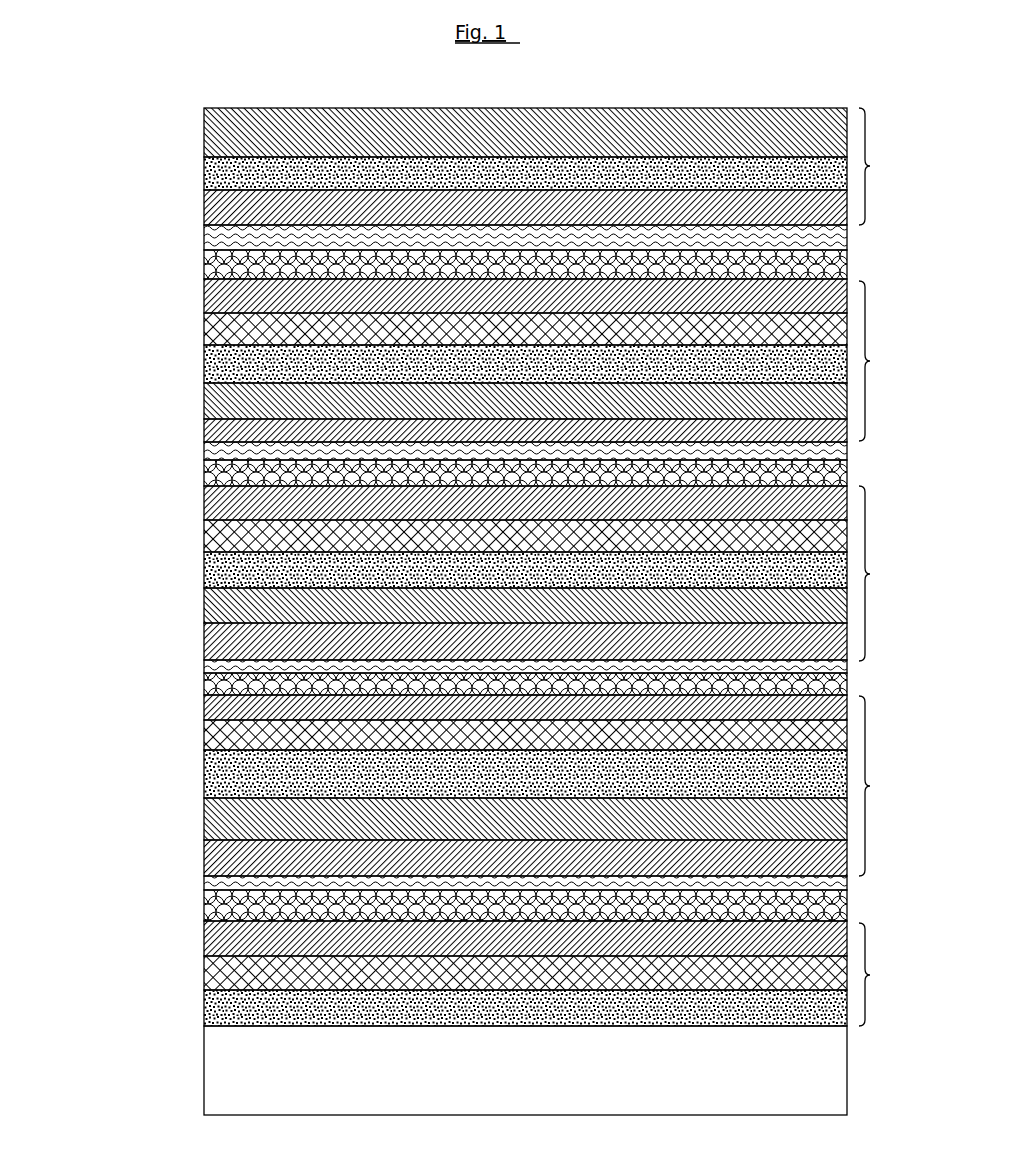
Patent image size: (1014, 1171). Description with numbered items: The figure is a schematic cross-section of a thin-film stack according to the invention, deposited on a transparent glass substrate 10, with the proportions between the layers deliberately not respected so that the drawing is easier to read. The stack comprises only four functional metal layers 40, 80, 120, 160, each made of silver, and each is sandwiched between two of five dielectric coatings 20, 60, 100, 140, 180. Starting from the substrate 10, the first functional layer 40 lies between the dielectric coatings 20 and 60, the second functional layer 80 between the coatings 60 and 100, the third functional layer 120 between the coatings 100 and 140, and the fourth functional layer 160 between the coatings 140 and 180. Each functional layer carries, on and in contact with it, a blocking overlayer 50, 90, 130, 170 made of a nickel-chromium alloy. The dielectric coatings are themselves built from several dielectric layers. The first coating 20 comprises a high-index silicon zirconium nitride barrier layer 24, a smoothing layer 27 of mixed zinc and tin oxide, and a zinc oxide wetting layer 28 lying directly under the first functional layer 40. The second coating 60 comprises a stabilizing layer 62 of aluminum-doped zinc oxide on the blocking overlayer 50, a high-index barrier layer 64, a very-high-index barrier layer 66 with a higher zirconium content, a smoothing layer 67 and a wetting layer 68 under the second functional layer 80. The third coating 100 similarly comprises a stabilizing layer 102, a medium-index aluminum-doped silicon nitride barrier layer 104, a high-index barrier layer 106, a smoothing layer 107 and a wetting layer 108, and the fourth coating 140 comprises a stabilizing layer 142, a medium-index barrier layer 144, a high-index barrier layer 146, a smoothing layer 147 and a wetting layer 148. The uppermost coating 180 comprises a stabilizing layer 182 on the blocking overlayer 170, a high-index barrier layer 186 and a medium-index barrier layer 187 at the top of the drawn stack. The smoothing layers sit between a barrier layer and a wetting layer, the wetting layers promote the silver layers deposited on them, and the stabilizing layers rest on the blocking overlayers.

The transparent glass substrate 10 is at (530, 1054).
The dielectric coating 20 is at (882, 974).
The high-index barrier layer 24 is at (196, 1002).
The smoothing layer 27 is at (196, 978).
The wetting layer 28 is at (196, 928).
The first functional layer 40 is at (840, 897).
The blocking overlayer 50 is at (196, 875).
The dielectric coating 60 is at (882, 786).
The stabilizing layer 62 is at (196, 852).
The high-index barrier layer 64 is at (196, 805).
The very-high-index barrier layer 66 is at (196, 762).
The smoothing layer 67 is at (196, 732).
The wetting layer 68 is at (196, 710).
The second functional layer 80 is at (840, 676).
The blocking overlayer 90 is at (196, 658).
The dielectric coating 100 is at (888, 573).
The stabilizing layer 102 is at (196, 640).
The medium-index barrier layer 104 is at (196, 602).
The high-index barrier layer 106 is at (196, 572).
The smoothing layer 107 is at (196, 525).
The wetting layer 108 is at (196, 495).
The third functional layer 120 is at (840, 462).
The blocking overlayer 130 is at (196, 444).
The dielectric coating 140 is at (886, 361).
The stabilizing layer 142 is at (196, 428).
The medium-index barrier layer 144 is at (196, 392).
The high-index barrier layer 146 is at (196, 355).
The smoothing layer 147 is at (196, 325).
The wetting layer 148 is at (196, 298).
The fourth functional layer 160 is at (840, 258).
The blocking overlayer 170 is at (196, 231).
The dielectric coating 180 is at (887, 166).
The stabilizing layer 182 is at (196, 204).
The high-index barrier layer 186 is at (196, 170).
The medium-index barrier layer 187 is at (196, 127).